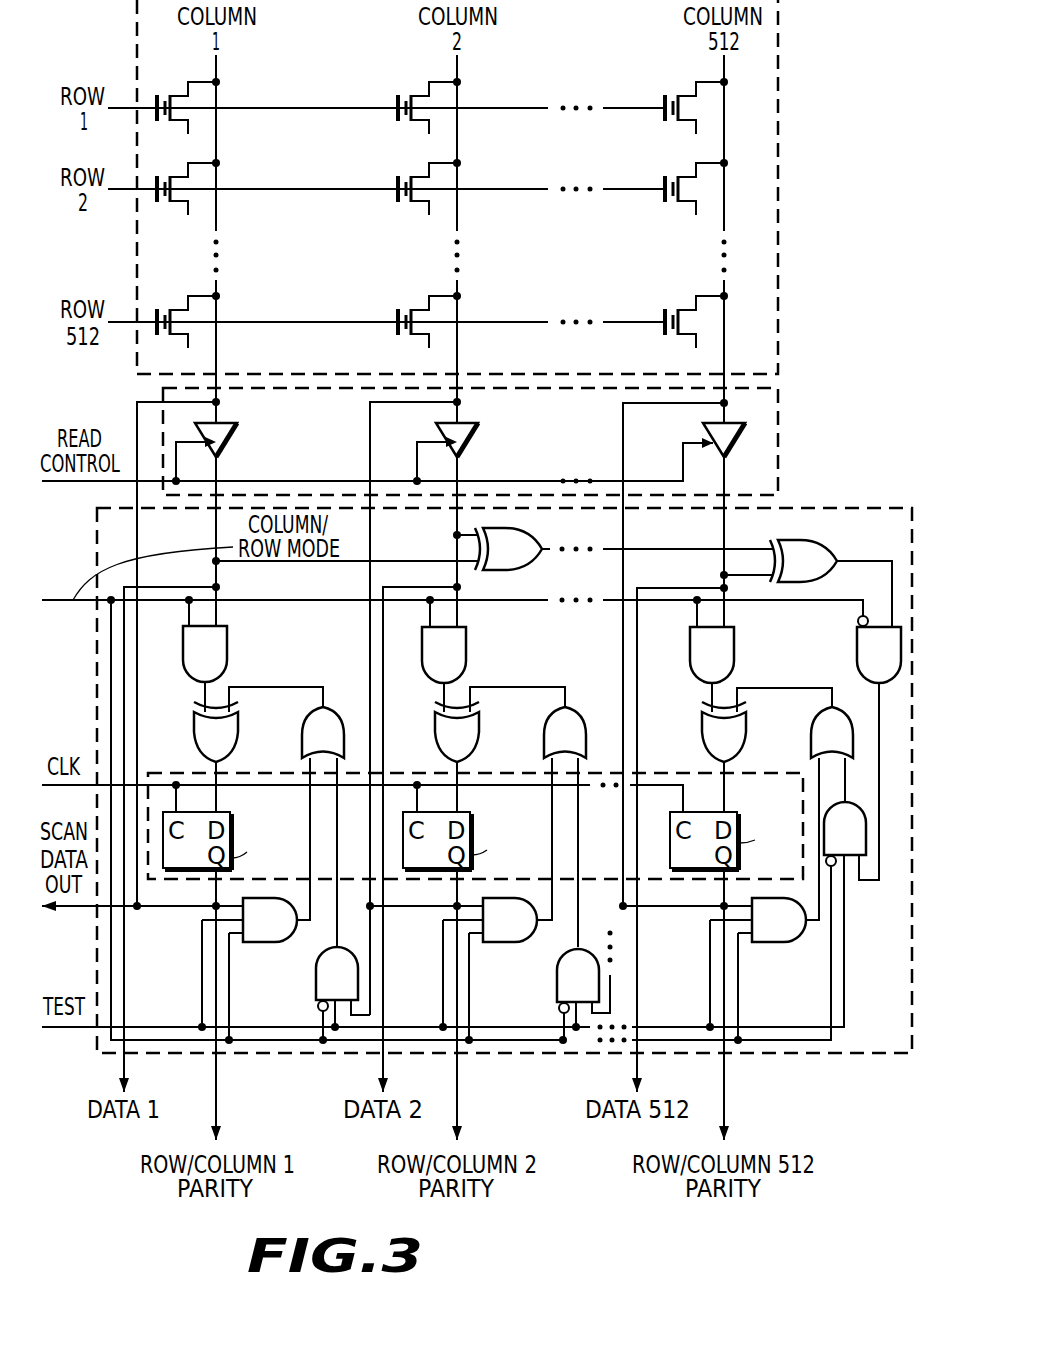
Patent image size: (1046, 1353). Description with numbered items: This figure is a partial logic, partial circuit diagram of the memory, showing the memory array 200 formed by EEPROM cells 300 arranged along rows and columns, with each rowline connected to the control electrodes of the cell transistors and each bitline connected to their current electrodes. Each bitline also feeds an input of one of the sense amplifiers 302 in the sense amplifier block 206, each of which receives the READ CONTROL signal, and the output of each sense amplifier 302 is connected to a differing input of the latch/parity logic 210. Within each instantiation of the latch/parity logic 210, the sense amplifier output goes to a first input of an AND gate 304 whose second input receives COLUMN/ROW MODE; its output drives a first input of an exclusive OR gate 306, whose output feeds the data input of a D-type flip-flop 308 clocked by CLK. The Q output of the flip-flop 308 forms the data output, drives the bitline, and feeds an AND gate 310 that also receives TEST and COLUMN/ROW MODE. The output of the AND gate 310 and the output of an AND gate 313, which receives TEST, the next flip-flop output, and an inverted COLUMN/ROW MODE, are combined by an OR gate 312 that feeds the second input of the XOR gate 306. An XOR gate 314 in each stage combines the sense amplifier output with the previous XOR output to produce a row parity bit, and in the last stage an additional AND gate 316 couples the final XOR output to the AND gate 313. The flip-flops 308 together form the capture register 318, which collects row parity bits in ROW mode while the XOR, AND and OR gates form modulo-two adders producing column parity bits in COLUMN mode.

The memory array 200 is at (778, 172).
The EEPROM cell 300 is at (197, 100).
The sense amplifier 206 is at (778, 431).
The sense amplifier 302 is at (236, 433).
The AND gate 304 is at (182, 655).
The exclusive OR gate 306 is at (702, 722).
The D-type flip-flop 308 is at (176, 873).
The AND gate 310 is at (250, 941).
The OR gate 312 is at (810, 743).
The AND gate 313 is at (866, 858).
The XOR gate 314 is at (532, 567).
The AND gate 316 is at (858, 647).
The capture register 318 is at (358, 772).
The latch/parity logic 210 is at (868, 1055).